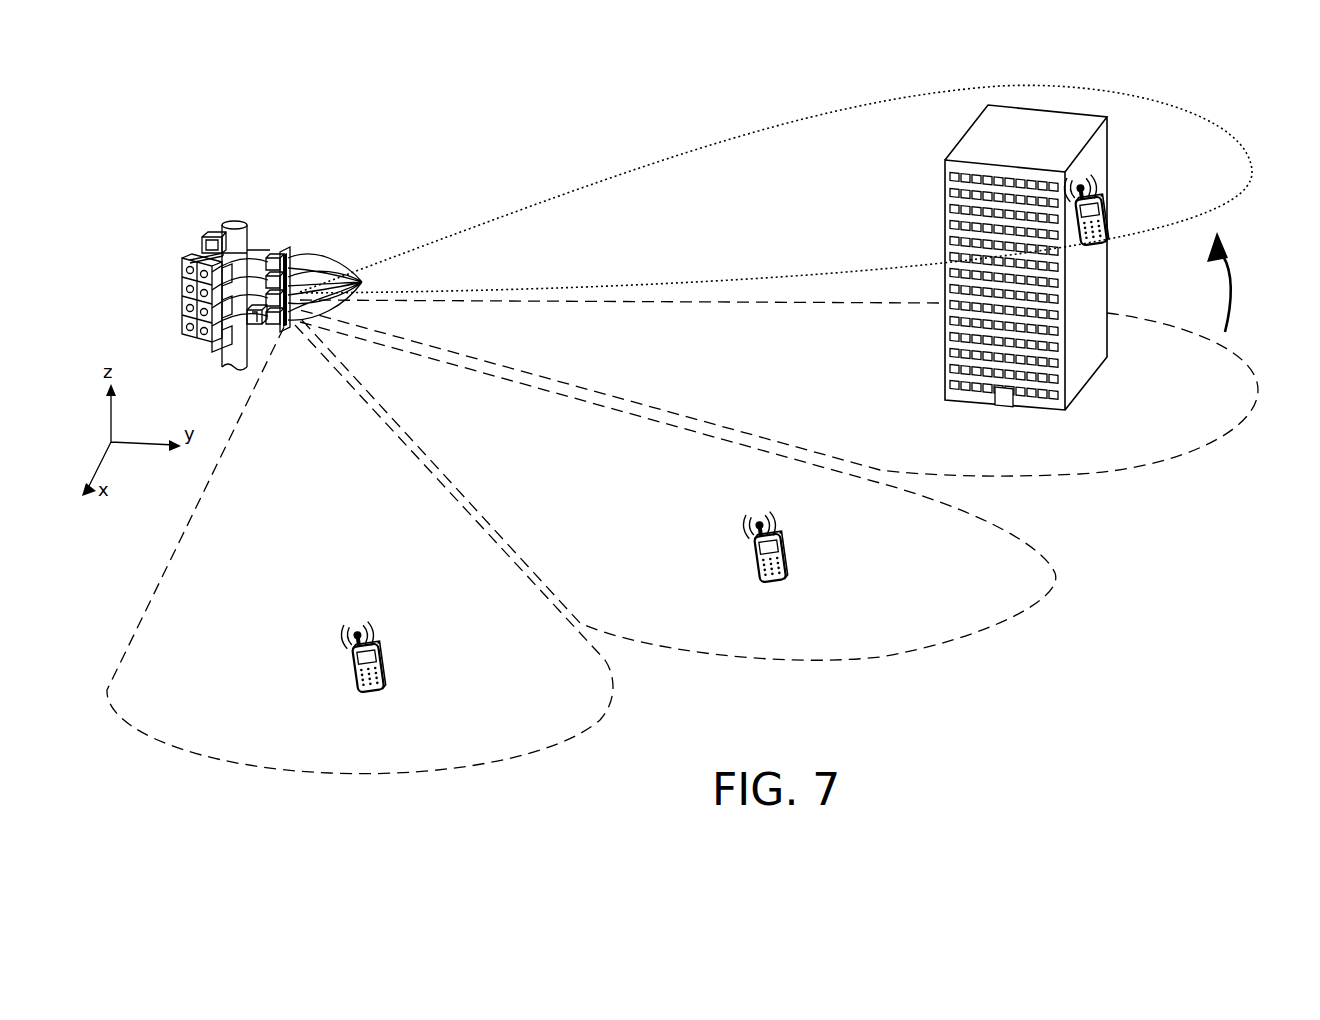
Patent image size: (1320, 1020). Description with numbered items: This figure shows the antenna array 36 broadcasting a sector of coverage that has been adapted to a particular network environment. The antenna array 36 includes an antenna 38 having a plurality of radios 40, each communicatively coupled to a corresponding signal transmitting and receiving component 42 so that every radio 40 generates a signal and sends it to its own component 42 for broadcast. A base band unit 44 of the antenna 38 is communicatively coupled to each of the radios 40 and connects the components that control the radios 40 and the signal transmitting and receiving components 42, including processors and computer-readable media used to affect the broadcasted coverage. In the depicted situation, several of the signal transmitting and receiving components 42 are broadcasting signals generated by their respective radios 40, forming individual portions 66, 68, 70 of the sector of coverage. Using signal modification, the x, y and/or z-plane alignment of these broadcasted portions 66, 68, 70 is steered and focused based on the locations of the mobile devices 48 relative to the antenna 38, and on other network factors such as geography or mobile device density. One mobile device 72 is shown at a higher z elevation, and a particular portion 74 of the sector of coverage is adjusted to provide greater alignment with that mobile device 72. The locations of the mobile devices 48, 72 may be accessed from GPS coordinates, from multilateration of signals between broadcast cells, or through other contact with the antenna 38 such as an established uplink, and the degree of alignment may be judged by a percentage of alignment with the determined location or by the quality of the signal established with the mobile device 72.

The antenna array 36 is at (256, 195).
The antenna 38 is at (272, 240).
The radios 40 is at (214, 298).
The signal transmitting and receiving components 42 is at (362, 283).
The base band unit 44 is at (255, 320).
The mobile devices 48 is at (355, 666).
The portion of the sector of coverage 66 is at (477, 676).
The portion of the sector of coverage 68 is at (893, 573).
The portion of the sector of coverage 70 is at (1171, 408).
The mobile device 72 is at (1105, 216).
The portion of the sector of coverage 74 is at (822, 121).